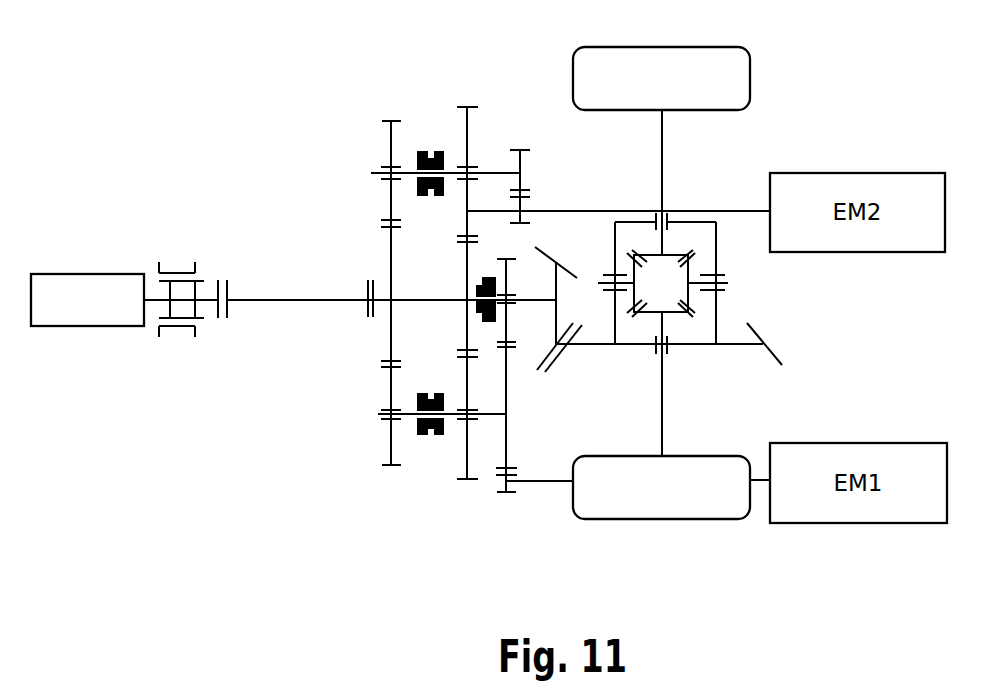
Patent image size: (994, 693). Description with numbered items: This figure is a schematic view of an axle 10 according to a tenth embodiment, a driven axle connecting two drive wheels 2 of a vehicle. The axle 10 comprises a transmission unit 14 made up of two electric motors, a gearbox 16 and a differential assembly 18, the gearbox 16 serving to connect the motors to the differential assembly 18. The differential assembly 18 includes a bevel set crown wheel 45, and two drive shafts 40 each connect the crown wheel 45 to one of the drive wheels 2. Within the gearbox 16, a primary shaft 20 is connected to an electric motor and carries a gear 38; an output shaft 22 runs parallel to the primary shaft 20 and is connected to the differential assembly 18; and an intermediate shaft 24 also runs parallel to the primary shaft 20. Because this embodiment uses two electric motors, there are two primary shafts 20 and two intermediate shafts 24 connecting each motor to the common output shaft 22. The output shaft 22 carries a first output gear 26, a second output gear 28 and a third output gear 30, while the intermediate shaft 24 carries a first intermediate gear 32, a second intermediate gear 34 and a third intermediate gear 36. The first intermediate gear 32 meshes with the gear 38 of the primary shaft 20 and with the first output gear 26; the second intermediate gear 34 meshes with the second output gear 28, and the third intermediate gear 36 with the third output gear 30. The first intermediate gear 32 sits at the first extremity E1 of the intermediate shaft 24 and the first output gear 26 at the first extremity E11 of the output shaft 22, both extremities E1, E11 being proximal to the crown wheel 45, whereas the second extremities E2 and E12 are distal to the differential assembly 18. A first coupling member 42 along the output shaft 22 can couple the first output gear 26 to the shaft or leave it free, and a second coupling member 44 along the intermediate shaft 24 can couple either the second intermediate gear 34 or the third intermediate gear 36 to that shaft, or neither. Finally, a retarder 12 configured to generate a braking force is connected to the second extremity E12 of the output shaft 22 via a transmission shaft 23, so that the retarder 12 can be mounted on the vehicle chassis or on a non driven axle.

The drive wheel 2 is at (700, 47).
The axle 10 is at (733, 143).
The retarder 12 is at (59, 297).
The transmission unit 14 is at (328, 202).
The gearbox 16 is at (410, 508).
The differential assembly 18 is at (818, 330).
The primary shaft 20 is at (560, 482).
The output shaft 22 is at (413, 293).
The transmission shaft 23 is at (275, 298).
The intermediate shaft 24 is at (482, 416).
The first output gear 26 is at (508, 272).
The second output gear 28 is at (468, 263).
The third output gear 30 is at (389, 233).
The first intermediate gear 32 is at (507, 400).
The second intermediate gear 34 is at (467, 447).
The third intermediate gear 36 is at (391, 447).
The gear 38 is at (510, 488).
The drive shaft 40 is at (663, 150).
The first coupling member 42 is at (478, 322).
The second coupling member 44 is at (423, 393).
The bevel set crown wheel 45 is at (722, 346).
The first extremity of the intermediate shaft E1 is at (507, 408).
The second extremity of the intermediate shaft E2 is at (380, 415).
The first extremity of the output shaft E11 is at (527, 300).
The second extremity of the output shaft E12 is at (378, 301).